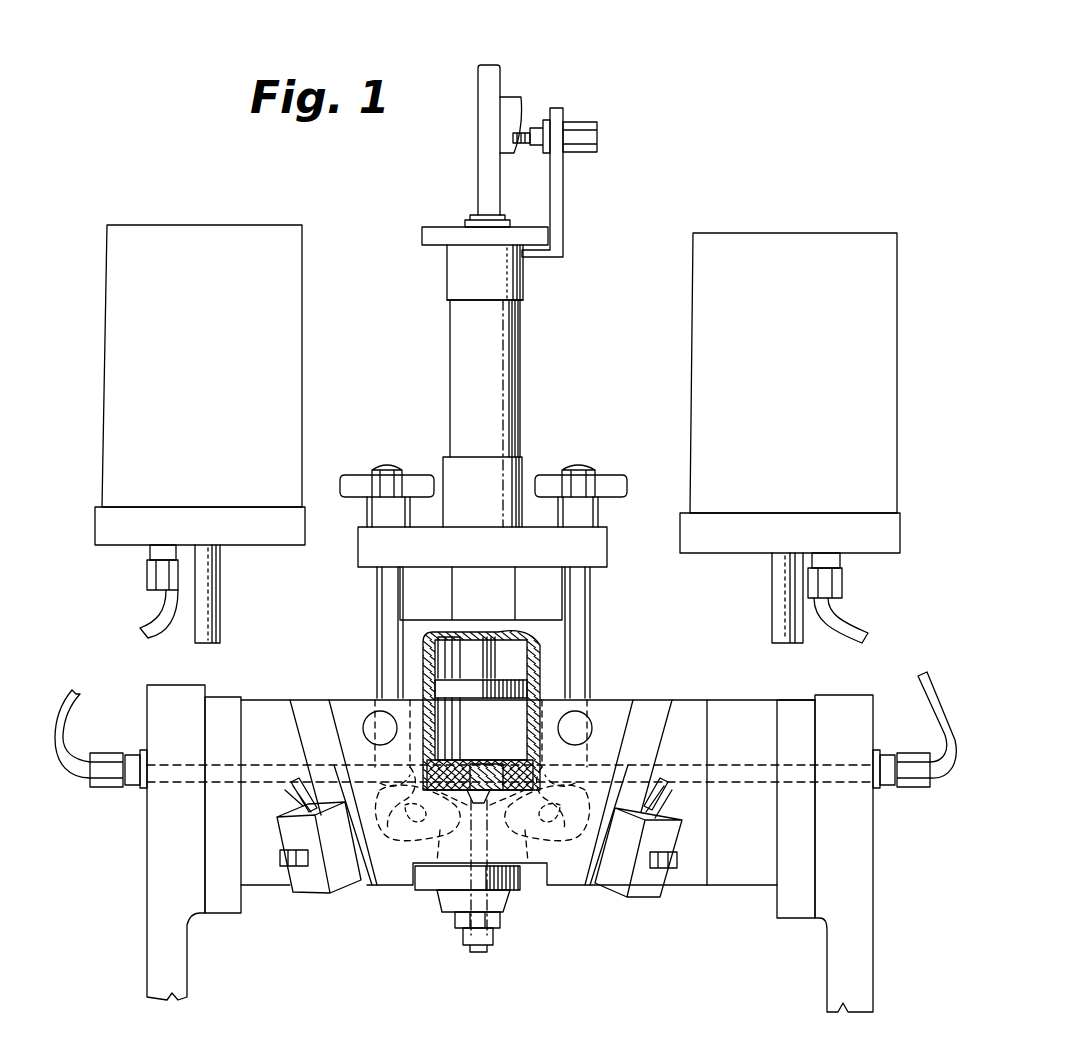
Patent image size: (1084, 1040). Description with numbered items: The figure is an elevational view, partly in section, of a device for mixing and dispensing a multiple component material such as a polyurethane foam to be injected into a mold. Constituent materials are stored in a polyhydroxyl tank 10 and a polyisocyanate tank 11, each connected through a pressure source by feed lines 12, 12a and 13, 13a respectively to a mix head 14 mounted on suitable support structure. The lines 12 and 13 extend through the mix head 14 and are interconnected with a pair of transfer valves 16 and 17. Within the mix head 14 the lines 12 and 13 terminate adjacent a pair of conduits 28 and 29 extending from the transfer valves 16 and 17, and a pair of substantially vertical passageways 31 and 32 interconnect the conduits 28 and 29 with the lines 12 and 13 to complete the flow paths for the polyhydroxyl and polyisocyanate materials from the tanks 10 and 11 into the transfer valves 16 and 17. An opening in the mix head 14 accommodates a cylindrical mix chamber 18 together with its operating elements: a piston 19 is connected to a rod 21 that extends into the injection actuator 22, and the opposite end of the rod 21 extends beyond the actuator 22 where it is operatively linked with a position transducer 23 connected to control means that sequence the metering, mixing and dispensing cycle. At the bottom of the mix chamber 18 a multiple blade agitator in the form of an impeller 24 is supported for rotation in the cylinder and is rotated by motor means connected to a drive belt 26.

The polyhydroxyl tank 10 is at (295, 270).
The polyisocyanate tank 11 is at (695, 275).
The feed line 12 is at (85, 712).
The feed line 12a is at (137, 622).
The feed line 13 is at (913, 699).
The feed line 13a is at (865, 626).
The mix head 14 is at (285, 652).
The transfer valve 16 is at (388, 890).
The transfer valve 17 is at (576, 898).
The mix chamber 18 is at (515, 715).
The piston 19 is at (525, 690).
The rod 21 is at (495, 647).
The injection actuator 22 is at (522, 345).
The position transducer 23 is at (522, 108).
The impeller 24 is at (500, 750).
The drive belt 26 is at (425, 893).
The conduit 28 is at (407, 890).
The conduit 29 is at (549, 890).
The vertical passageway 31 is at (380, 778).
The vertical passageway 32 is at (632, 790).